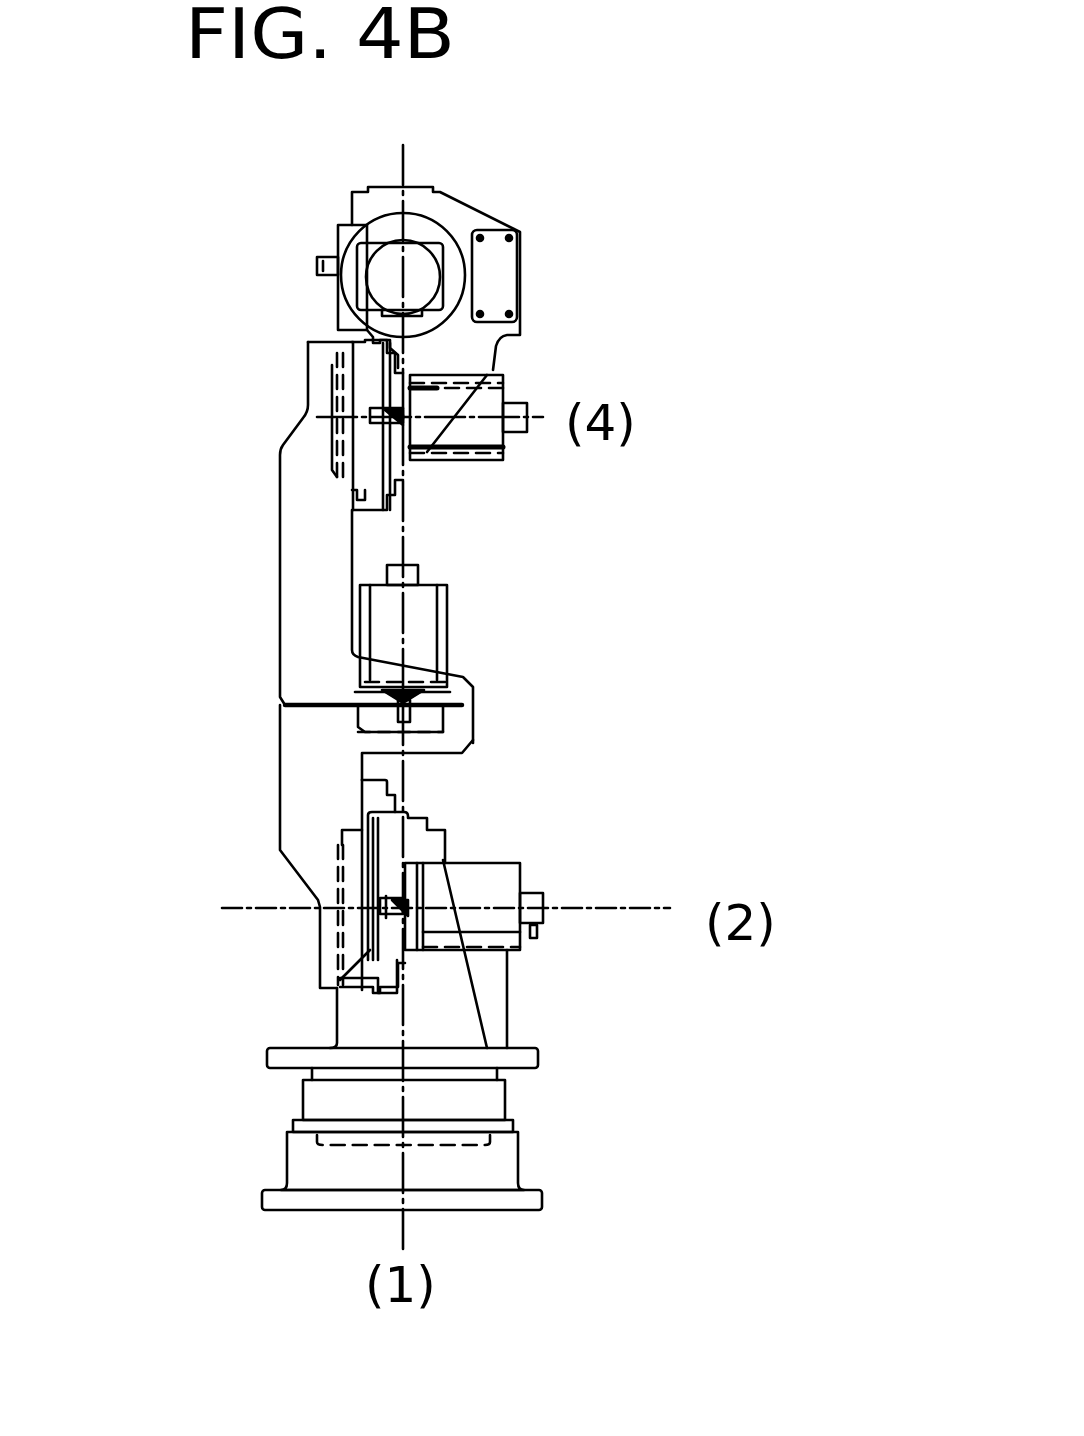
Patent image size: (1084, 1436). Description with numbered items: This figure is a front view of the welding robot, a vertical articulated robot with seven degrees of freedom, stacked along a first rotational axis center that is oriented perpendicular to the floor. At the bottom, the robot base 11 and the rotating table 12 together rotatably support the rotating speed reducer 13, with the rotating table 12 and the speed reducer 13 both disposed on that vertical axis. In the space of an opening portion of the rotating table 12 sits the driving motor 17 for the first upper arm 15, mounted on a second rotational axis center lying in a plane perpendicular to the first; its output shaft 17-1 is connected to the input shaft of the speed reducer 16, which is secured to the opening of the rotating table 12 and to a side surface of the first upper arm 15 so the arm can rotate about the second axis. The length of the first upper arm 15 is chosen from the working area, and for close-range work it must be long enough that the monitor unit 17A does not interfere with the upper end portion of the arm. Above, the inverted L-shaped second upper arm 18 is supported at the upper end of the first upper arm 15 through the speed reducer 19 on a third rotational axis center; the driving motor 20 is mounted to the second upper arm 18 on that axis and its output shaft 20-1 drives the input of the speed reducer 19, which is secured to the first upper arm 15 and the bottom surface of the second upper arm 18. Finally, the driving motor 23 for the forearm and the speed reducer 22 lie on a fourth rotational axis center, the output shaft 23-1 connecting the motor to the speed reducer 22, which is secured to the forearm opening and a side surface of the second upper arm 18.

The robot base 11 is at (525, 1163).
The rotating table 12 is at (335, 1017).
The speed reducer 13 is at (478, 1105).
The first upper arm 15 is at (283, 790).
The speed reducer for the first upper arm 16 is at (347, 888).
The driving motor for the first upper arm 17 is at (497, 893).
The monitor unit 17A is at (400, 905).
The output shaft of the driving motor for the first upper arm 17-1 is at (400, 900).
The second upper arm 18 is at (283, 555).
The speed reducer for the second upper arm 19 is at (423, 722).
The driving motor for the second upper arm 20 is at (437, 622).
The output shaft of the driving motor for the second upper arm 20-1 is at (403, 698).
The speed reducer for the forearm 22 is at (370, 380).
The driving motor for the forearm 23 is at (492, 407).
The output shaft of the driving motor for the forearm 23-1 is at (397, 420).